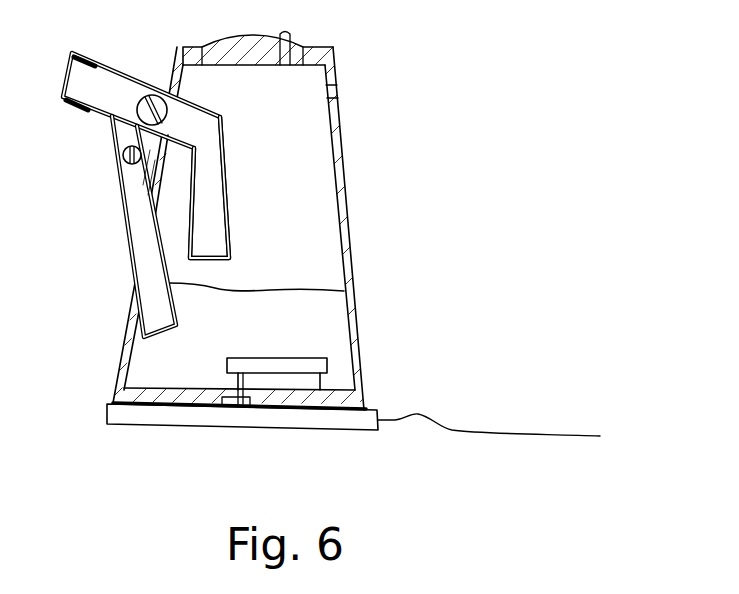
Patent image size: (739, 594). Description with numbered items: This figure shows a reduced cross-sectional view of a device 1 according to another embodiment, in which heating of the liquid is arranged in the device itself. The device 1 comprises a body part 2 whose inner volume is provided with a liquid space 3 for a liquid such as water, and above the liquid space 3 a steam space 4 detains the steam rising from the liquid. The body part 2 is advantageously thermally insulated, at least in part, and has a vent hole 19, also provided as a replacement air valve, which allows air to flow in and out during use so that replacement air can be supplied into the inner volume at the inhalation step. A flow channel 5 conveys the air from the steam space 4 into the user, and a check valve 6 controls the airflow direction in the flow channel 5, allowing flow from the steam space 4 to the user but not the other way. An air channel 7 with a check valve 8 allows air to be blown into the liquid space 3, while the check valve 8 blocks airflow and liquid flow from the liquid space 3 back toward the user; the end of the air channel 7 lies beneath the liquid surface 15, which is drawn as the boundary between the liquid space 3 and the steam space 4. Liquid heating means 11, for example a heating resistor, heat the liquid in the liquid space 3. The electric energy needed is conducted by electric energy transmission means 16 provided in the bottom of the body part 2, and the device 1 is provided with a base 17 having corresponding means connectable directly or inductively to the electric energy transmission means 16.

The device 1 is at (366, 29).
The body part 2 is at (260, 220).
The liquid space 3 is at (220, 335).
The steam space 4 is at (261, 273).
The flow channel 5 is at (216, 215).
The check valve 6 is at (141, 95).
The air channel 7 is at (133, 223).
The check valve 8 is at (123, 156).
The liquid heating means 11 is at (282, 362).
The liquid level 15 is at (355, 290).
The electric energy transmission means 16 is at (237, 389).
The base 17 is at (107, 413).
The vent hole 19 is at (333, 90).